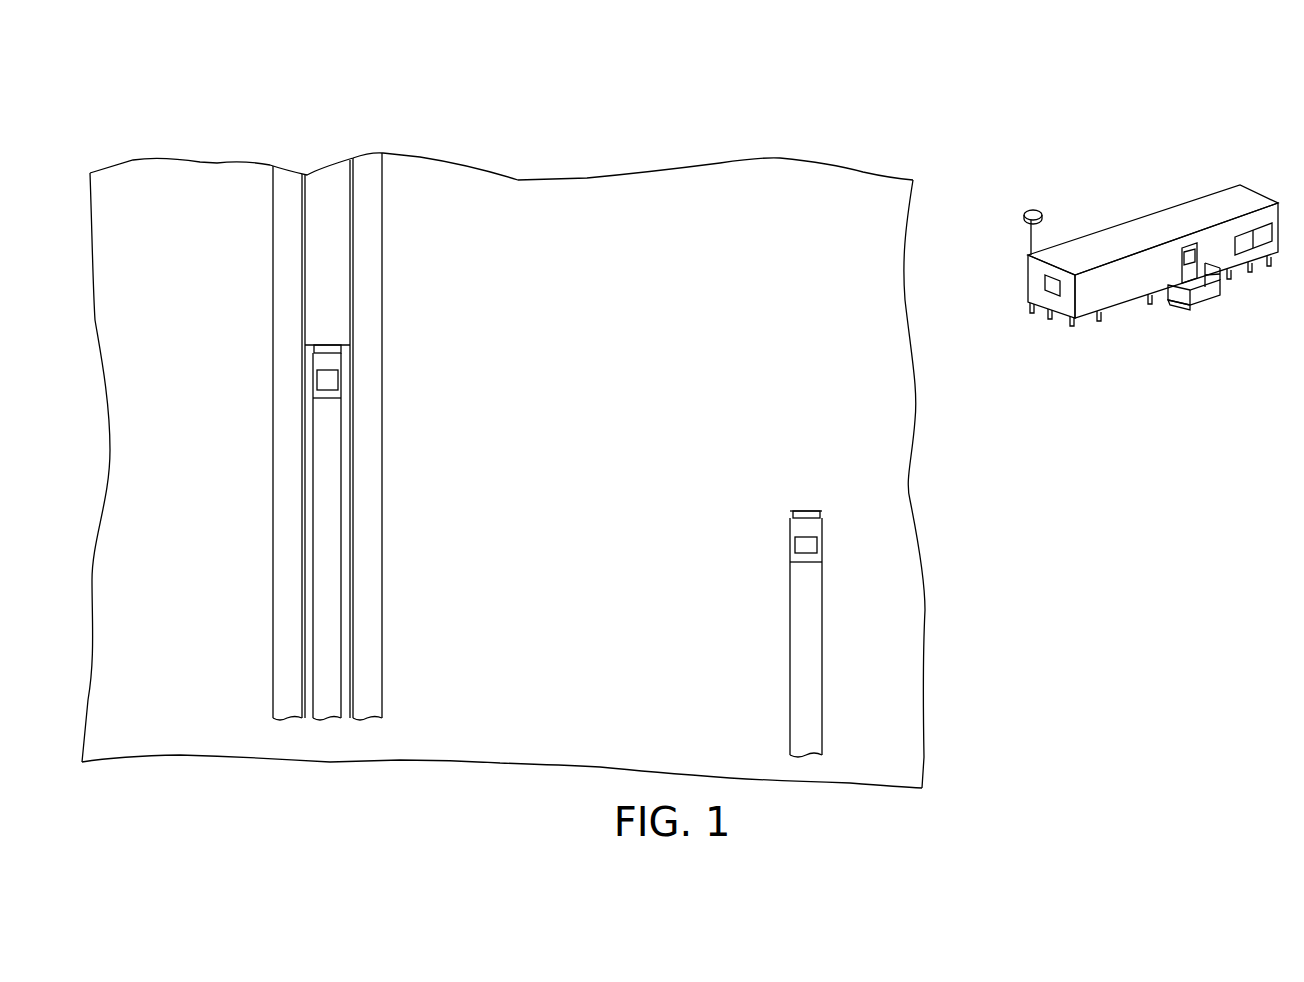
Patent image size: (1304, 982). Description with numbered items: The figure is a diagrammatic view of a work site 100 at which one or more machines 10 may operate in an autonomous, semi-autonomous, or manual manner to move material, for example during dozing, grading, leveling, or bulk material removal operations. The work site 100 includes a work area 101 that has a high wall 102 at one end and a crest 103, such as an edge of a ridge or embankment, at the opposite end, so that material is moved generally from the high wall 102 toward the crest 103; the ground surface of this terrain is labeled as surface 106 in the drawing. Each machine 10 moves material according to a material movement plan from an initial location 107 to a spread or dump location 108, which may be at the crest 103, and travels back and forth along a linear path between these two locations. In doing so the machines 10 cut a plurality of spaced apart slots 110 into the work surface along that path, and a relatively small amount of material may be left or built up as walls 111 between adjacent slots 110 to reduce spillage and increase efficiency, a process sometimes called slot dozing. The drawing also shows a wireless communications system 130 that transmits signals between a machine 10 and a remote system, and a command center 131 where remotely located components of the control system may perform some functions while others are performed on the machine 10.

The work site 100 is at (128, 131).
The work area 101 is at (147, 313).
The high wall 102 is at (843, 777).
The crest 103 is at (217, 160).
The surface 106 is at (162, 193).
The initial location 107 is at (395, 733).
The dump location 108 is at (333, 140).
The slots 110 is at (328, 530).
The walls 111 is at (305, 468).
The machine 10 is at (322, 395).
The wireless communications system 130 is at (1043, 215).
The command center 131 is at (1160, 236).